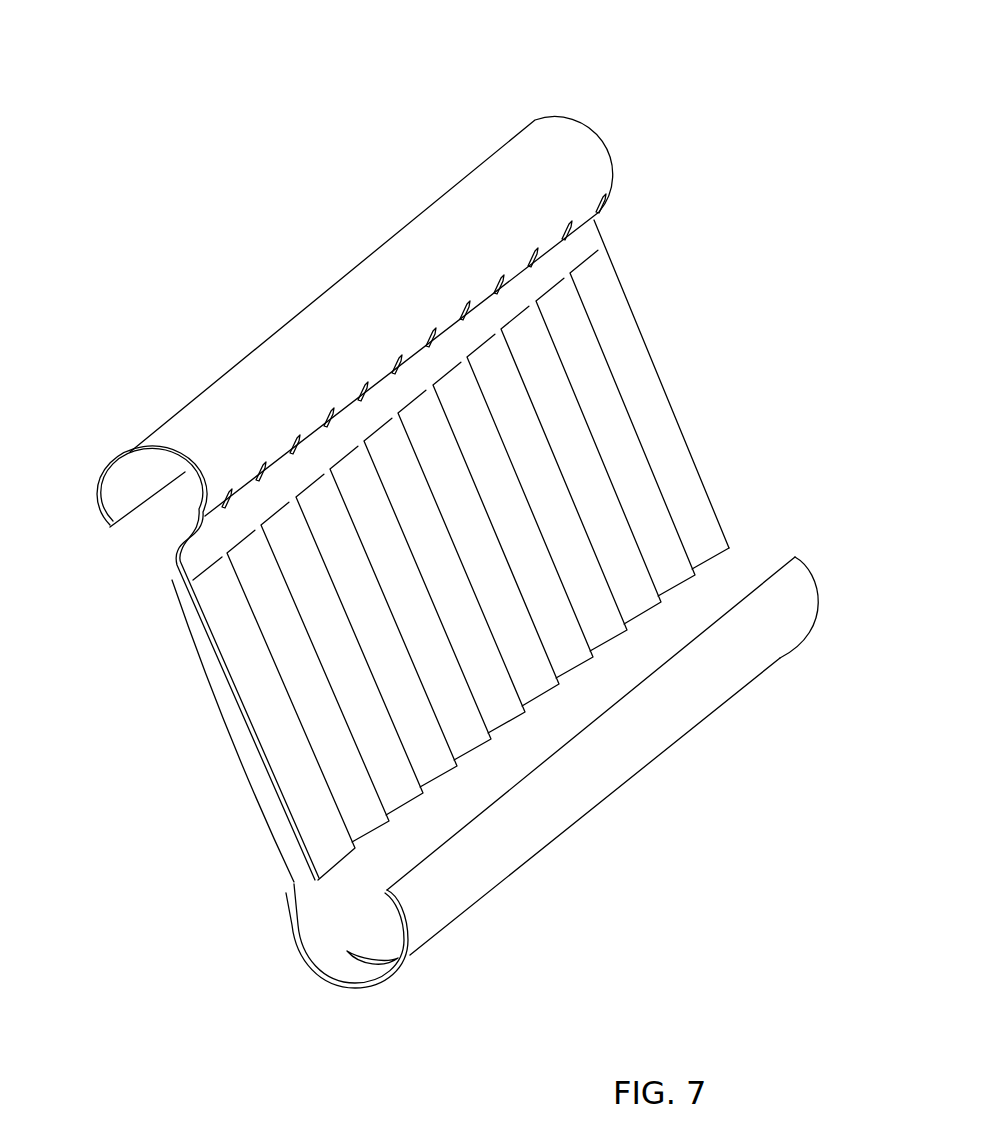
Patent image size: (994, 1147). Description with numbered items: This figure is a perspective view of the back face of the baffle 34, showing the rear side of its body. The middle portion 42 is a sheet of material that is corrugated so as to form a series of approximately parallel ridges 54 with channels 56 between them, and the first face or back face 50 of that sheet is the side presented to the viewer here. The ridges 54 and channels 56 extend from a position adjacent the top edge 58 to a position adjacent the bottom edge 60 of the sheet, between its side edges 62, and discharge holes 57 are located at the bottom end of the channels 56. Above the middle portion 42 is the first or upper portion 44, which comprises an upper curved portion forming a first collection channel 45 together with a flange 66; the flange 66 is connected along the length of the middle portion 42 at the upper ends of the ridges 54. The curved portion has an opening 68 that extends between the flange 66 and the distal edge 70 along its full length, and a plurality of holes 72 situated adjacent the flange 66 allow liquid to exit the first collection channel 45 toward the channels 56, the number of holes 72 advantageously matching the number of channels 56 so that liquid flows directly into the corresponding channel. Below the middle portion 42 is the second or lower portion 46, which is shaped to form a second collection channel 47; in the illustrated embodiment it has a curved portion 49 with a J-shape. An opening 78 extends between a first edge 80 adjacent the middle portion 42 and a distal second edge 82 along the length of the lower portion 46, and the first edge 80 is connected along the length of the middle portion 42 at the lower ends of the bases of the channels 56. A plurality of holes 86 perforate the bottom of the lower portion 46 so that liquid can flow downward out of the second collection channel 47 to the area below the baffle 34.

The baffle 34 is at (148, 122).
The middle portion 42 is at (763, 320).
The first or upper portion 44 is at (679, 158).
The first collection channel 45 is at (128, 522).
The second or lower portion 46 is at (203, 970).
The second collection channel 47 is at (360, 923).
The curved portion 49 is at (406, 931).
The first face or back face 50 is at (707, 362).
The ridges 54 is at (542, 313).
The channels 56 is at (560, 323).
The discharge holes 57 is at (628, 618).
The top edge 58 is at (185, 579).
The bottom edge 60 is at (298, 880).
The side edges 62 is at (243, 718).
The flange 66 is at (190, 558).
The opening 68 is at (155, 545).
The distal edge 70 is at (110, 537).
The holes 72 is at (290, 456).
The opening 78 is at (743, 560).
The first edge 80 is at (290, 893).
The distal second edge 82 is at (775, 560).
The holes 86 is at (365, 962).